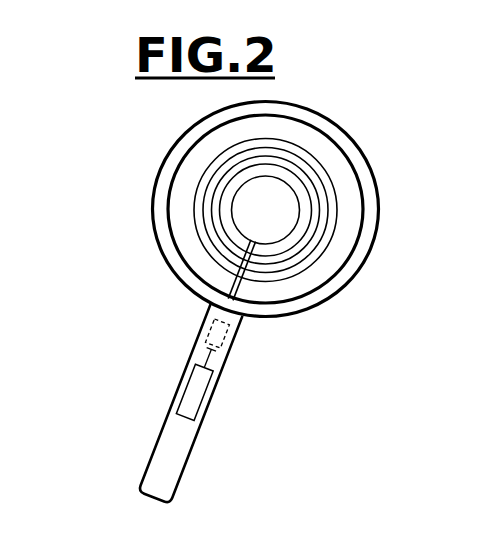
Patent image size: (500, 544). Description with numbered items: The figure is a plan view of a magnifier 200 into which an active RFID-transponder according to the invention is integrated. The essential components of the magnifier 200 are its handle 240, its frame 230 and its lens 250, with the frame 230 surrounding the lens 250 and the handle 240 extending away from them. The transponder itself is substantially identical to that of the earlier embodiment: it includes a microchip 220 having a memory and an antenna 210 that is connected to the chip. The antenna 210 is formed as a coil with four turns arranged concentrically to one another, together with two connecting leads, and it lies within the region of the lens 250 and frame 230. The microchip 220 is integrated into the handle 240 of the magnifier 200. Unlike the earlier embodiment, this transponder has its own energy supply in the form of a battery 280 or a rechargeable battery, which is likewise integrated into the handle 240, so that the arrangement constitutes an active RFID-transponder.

The magnifier 200 is at (204, 279).
The antenna 210 is at (175, 202).
The microchip 220 is at (205, 332).
The frame 230 is at (290, 324).
The handle 240 is at (160, 457).
The lens 250 is at (311, 139).
The battery 280 is at (176, 388).